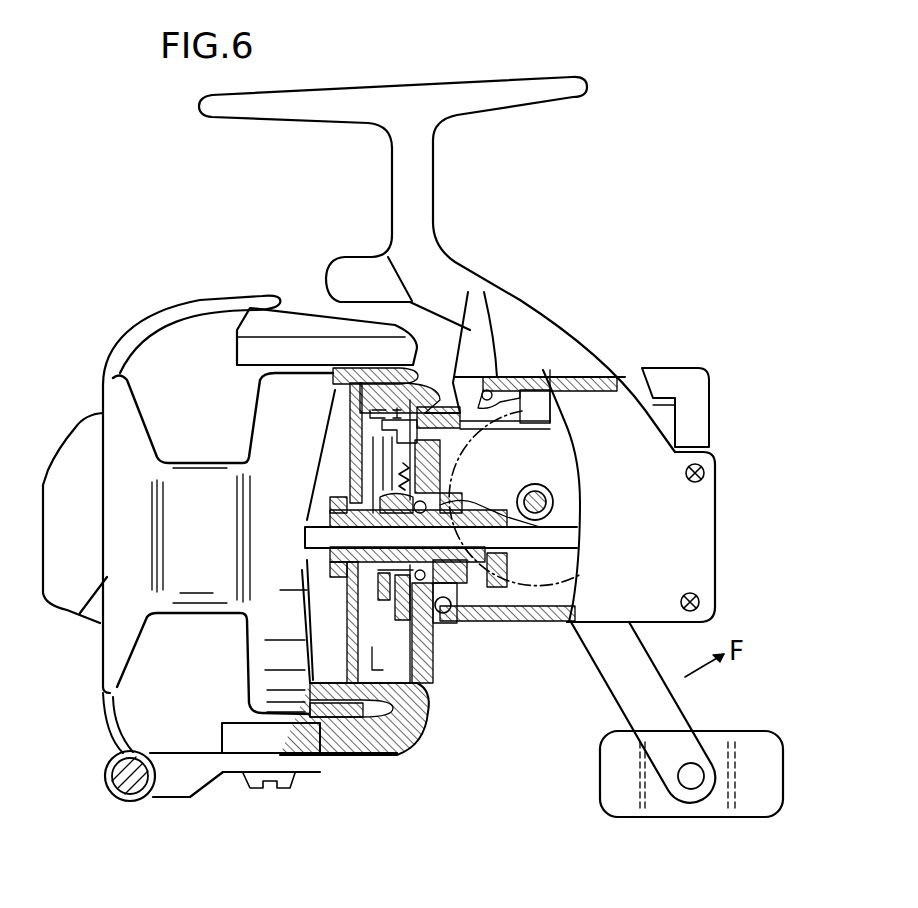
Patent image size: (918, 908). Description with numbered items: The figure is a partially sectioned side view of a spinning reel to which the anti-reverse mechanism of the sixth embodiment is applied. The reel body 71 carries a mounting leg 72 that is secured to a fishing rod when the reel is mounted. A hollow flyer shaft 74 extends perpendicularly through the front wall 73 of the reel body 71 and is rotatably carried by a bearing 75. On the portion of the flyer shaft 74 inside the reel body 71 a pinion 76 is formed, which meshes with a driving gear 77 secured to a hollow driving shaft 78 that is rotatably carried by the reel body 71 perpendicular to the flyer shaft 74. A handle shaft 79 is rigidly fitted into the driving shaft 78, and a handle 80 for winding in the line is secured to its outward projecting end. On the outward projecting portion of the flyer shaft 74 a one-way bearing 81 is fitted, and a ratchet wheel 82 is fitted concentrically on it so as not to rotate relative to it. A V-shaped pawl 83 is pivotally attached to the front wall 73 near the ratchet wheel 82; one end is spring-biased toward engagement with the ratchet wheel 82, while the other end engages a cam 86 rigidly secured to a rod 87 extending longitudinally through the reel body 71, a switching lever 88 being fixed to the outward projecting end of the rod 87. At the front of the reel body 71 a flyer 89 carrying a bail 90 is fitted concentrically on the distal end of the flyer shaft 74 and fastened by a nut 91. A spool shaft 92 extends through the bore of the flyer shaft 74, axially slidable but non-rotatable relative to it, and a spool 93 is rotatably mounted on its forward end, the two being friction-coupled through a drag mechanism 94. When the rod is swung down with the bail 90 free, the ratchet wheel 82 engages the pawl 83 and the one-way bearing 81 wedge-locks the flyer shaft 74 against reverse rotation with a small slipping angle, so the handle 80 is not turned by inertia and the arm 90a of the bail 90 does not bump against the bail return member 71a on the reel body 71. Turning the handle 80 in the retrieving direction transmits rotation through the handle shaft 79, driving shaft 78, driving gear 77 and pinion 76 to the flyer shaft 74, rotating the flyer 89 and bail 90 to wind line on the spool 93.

The mounting leg 72 is at (520, 86).
The bail return member 71a is at (347, 258).
The rod 87 is at (473, 300).
The one-way bearing 81 is at (582, 378).
The switching lever 88 is at (660, 369).
The driving gear 77 is at (520, 375).
The driving shaft 78 is at (540, 485).
The handle shaft 79 is at (547, 486).
The pinion 76 is at (553, 515).
The spool shaft 92 is at (565, 541).
The cam 86 is at (357, 368).
The flyer 89 is at (250, 307).
The bail 90 is at (157, 314).
The drag mechanism 94 is at (62, 460).
The spool 93 is at (80, 614).
The arm of the bail 90a is at (179, 784).
The nut 91 is at (312, 570).
The reel body 71 is at (352, 598).
The V-shaped pawl 83 is at (343, 453).
The ratchet wheel 82 is at (360, 488).
The bearing 75 is at (430, 618).
The flyer shaft 74 is at (498, 618).
The front wall 73 is at (425, 664).
The handle 80 is at (662, 697).